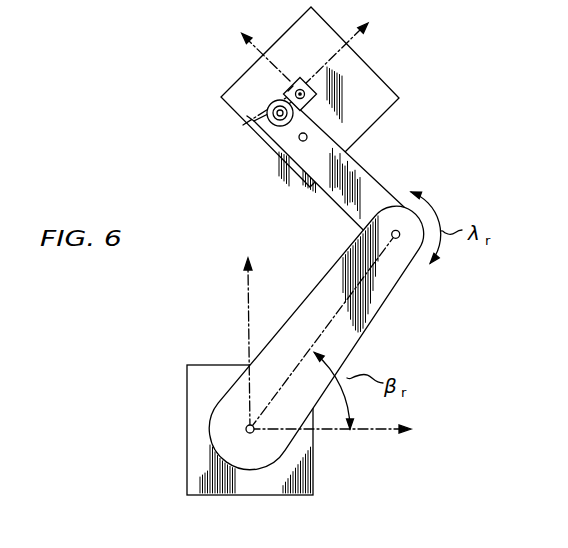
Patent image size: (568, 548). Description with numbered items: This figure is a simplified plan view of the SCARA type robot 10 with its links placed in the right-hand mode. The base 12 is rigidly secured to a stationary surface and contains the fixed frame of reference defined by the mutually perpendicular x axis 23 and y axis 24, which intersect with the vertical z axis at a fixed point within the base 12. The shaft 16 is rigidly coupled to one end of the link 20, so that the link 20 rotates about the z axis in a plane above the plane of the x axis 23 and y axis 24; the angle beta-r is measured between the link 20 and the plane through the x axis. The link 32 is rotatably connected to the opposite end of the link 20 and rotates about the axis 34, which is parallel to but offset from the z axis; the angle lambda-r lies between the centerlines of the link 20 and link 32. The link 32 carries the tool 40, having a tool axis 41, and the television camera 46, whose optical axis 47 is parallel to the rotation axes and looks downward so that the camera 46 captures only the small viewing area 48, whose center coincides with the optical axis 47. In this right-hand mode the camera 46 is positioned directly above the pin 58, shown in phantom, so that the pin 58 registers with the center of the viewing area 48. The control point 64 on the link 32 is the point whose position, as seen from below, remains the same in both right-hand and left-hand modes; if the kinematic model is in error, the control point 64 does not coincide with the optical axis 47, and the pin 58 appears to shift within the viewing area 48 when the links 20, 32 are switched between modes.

The robot 10 is at (106, 462).
The base 12 is at (187, 478).
The shaft 16 is at (245, 429).
The link 20 is at (367, 327).
The x axis 23 is at (386, 433).
The y axis 24 is at (247, 318).
The link 32 is at (380, 182).
The axis 34 is at (391, 234).
The tool 40 is at (253, 123).
The tool axis 41 is at (267, 112).
The television camera 46 is at (314, 106).
The optical axis 47 is at (300, 89).
The viewing area 48 is at (368, 133).
The pin 58 is at (288, 90).
The control point 64 is at (299, 140).